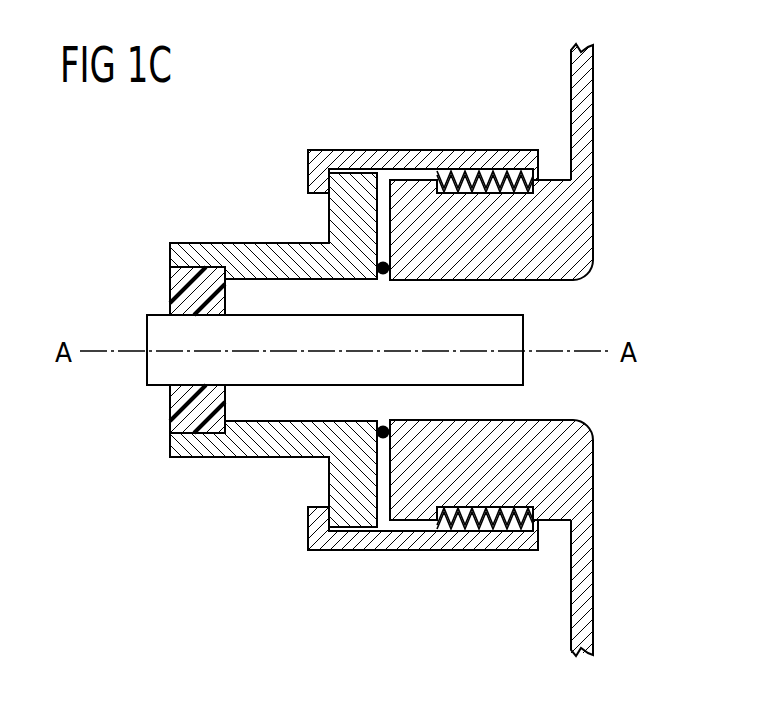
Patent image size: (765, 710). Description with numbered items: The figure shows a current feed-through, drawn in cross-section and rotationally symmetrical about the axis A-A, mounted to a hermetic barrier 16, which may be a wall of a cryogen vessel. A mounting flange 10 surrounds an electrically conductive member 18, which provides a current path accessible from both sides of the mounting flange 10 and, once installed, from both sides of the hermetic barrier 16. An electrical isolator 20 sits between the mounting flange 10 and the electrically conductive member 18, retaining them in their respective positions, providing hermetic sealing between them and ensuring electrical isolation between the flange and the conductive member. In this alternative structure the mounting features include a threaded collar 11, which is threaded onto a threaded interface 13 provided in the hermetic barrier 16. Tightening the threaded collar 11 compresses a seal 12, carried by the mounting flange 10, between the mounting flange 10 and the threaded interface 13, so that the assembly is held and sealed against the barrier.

The mounting flange 10 is at (251, 252).
The threaded collar 11 is at (340, 155).
The seal 12 is at (376, 261).
The threaded interface 13 is at (585, 245).
The hermetic barrier 16 is at (587, 73).
The electrically conductive member 18 is at (157, 370).
The electrical isolator 20 is at (176, 283).